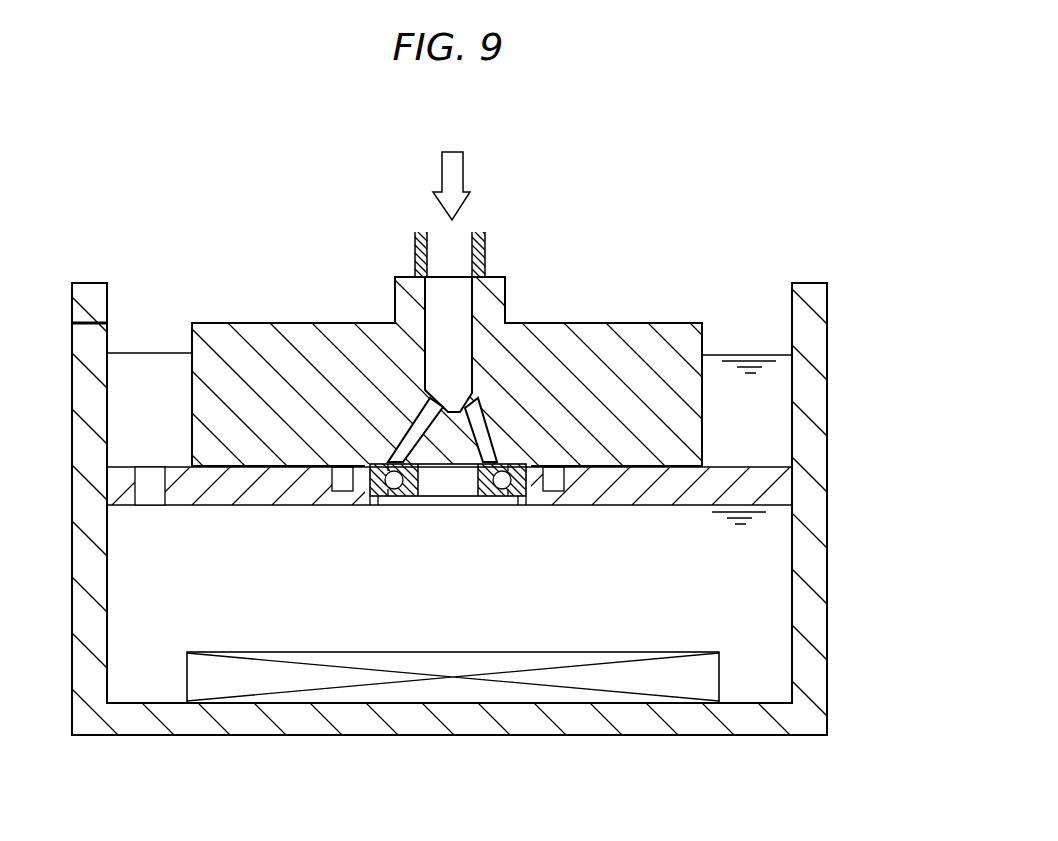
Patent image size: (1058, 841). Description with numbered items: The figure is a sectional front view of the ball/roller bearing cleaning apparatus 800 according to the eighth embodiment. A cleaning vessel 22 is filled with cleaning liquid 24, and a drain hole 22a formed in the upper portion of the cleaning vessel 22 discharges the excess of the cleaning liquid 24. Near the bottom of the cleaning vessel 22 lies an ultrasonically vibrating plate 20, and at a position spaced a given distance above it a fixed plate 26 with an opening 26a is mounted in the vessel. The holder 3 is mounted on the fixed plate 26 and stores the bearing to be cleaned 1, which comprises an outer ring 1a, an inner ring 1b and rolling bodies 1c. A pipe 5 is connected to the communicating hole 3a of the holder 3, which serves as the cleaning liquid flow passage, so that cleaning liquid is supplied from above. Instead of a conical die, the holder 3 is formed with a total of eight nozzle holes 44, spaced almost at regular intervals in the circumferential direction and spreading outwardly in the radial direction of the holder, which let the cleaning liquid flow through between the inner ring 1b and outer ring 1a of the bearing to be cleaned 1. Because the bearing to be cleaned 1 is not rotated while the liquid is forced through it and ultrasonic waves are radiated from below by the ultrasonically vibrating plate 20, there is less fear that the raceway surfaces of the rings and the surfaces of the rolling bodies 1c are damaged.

The ball/roller bearing cleaning apparatus 800 is at (684, 202).
The cleaning vessel 22 is at (803, 283).
The drain hole 22a is at (78, 333).
The cleaning liquid 24 is at (463, 172).
The holder 3 is at (444, 365).
The communicating hole 3a is at (442, 340).
The nozzle holes 44 is at (382, 424).
The pipe 5 is at (417, 256).
The fixed plate 26 is at (491, 506).
The opening 26a is at (148, 497).
The bearing to be cleaned 1 is at (477, 409).
The inner ring 1b is at (374, 497).
The rolling bodies 1c is at (391, 497).
The outer ring 1a is at (517, 463).
The ultrasonically vibrating plate 20 is at (718, 676).